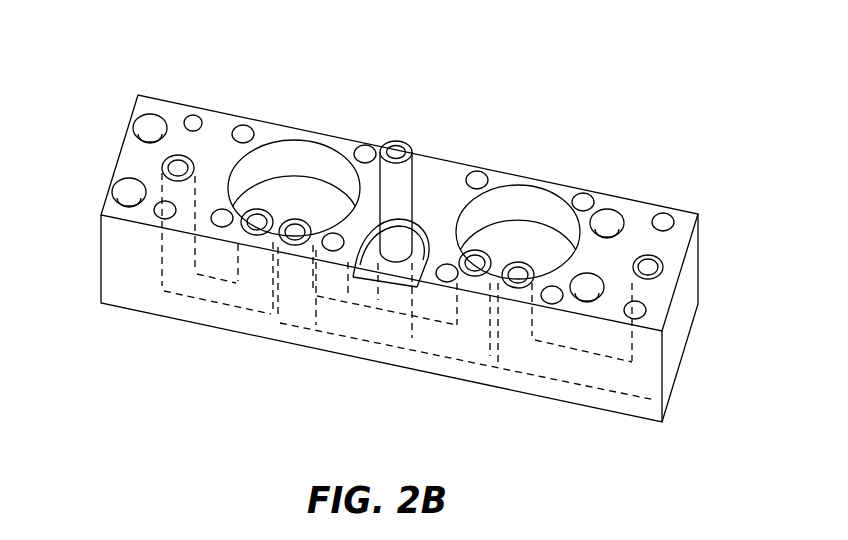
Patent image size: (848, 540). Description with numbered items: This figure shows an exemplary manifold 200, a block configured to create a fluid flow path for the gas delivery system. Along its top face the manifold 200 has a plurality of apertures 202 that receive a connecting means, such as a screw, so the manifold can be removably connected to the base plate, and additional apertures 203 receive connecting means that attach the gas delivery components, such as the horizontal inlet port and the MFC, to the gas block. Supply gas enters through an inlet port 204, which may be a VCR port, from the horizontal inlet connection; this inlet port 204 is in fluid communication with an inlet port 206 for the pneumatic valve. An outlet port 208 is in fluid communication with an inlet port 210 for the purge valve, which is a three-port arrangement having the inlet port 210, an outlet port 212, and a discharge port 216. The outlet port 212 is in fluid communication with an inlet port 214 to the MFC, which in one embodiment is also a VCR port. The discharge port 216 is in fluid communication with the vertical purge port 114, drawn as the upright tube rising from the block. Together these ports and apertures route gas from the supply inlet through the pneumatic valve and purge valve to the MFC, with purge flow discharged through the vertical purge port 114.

The manifold 200 is at (567, 120).
The vertical purge port 114 is at (412, 152).
The apertures 202 is at (130, 193).
The additional apertures 203 is at (166, 208).
The inlet port 204 is at (648, 266).
The inlet port for the pneumatic valve 206 is at (518, 277).
The outlet port 208 is at (475, 262).
The inlet port for the purge valve 210 is at (322, 240).
The outlet port 212 is at (257, 220).
The inlet port to the MFC 214 is at (178, 170).
The discharge port 216 is at (298, 230).